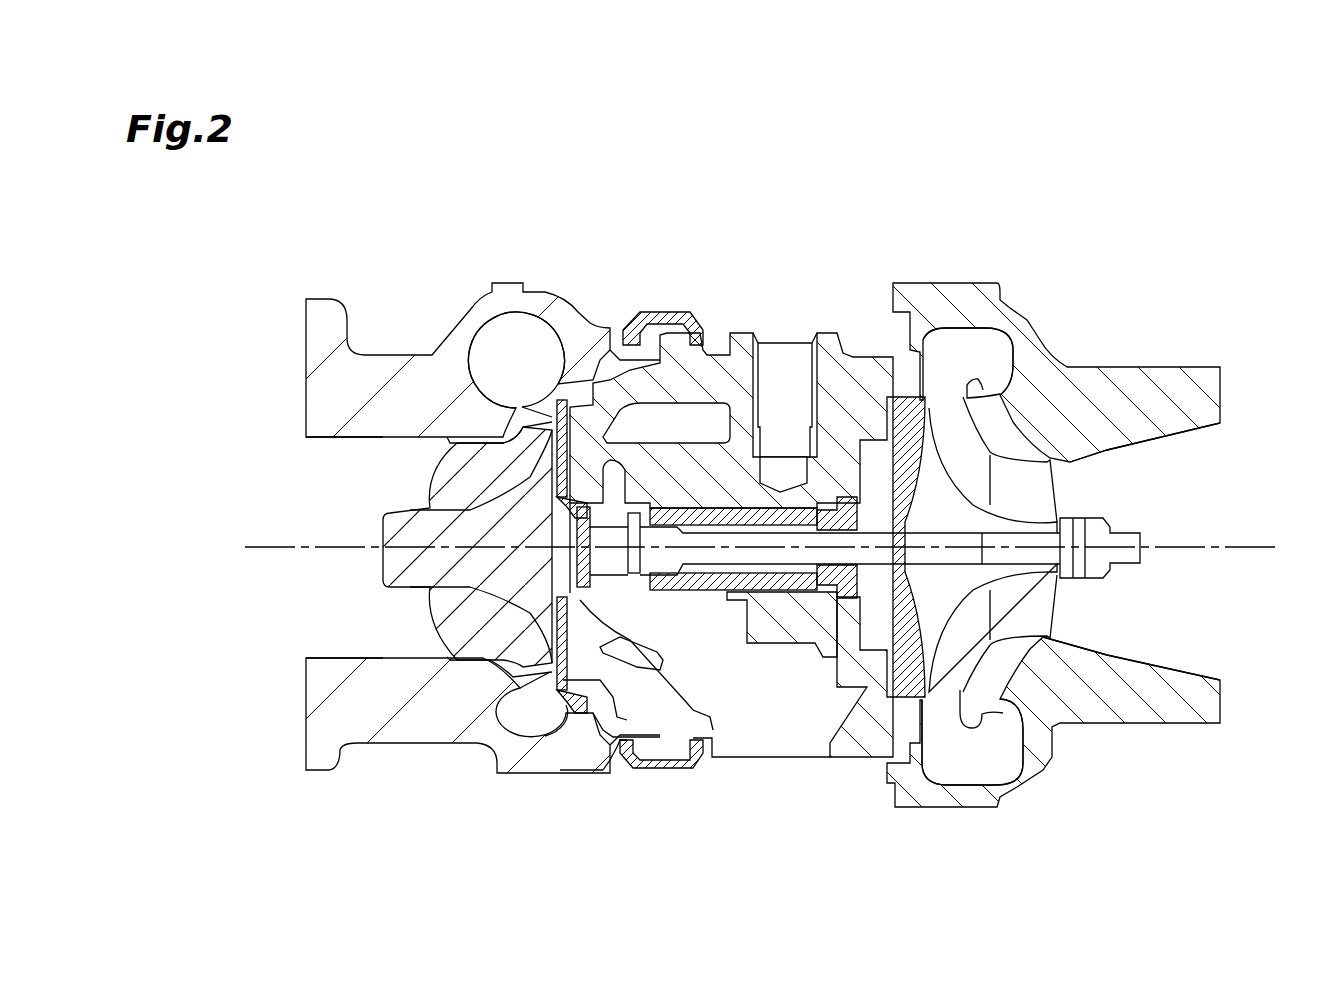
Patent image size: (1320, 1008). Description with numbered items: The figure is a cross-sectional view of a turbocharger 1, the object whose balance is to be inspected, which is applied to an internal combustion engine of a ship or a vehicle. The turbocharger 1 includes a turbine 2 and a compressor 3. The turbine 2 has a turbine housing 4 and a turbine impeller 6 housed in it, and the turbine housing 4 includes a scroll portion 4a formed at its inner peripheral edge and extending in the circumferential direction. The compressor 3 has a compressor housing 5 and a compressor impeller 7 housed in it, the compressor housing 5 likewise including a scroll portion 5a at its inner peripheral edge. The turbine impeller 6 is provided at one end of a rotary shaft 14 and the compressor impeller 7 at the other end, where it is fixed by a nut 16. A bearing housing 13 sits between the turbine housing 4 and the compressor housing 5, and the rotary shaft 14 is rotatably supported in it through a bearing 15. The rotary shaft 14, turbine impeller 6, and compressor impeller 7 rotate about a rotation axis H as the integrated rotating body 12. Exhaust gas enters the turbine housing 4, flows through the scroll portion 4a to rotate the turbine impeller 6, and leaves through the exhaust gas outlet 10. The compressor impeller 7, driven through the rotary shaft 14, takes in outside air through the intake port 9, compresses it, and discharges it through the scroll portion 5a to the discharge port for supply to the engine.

The turbocharger 1 is at (405, 195).
The turbine 2 is at (405, 298).
The compressor 3 is at (1095, 320).
The turbine housing 4 is at (546, 303).
The scroll portion 4a is at (483, 335).
The compressor housing 5 is at (958, 297).
The scroll portion 5a is at (1003, 318).
The turbine impeller 6 is at (393, 563).
The compressor impeller 7 is at (1060, 607).
The intake port 9 is at (1185, 445).
The exhaust gas outlet 10 is at (327, 468).
The rotating body 12 is at (366, 528).
The bearing housing 13 is at (741, 330).
The rotary shaft 14 is at (738, 557).
The bearing 15 is at (712, 592).
The nut 16 is at (1097, 570).
The rotation axis H is at (1183, 547).